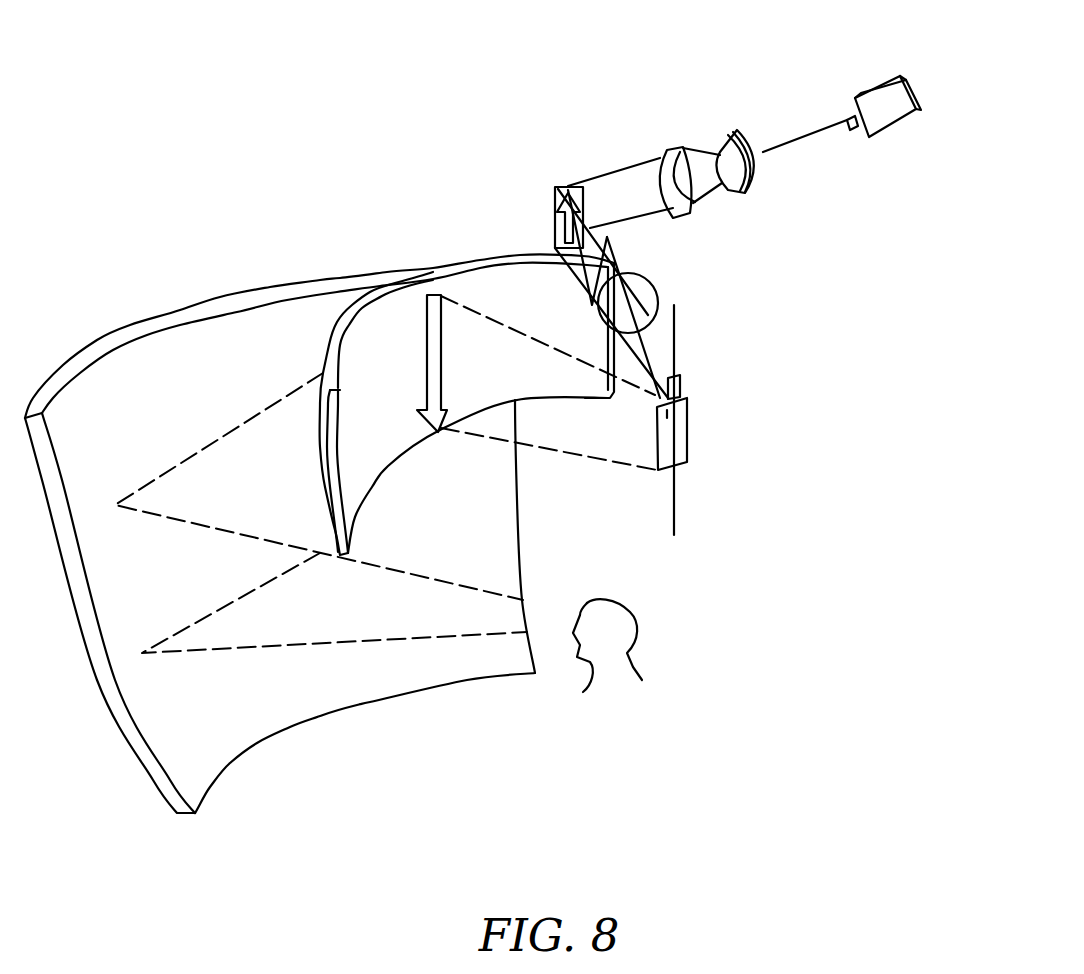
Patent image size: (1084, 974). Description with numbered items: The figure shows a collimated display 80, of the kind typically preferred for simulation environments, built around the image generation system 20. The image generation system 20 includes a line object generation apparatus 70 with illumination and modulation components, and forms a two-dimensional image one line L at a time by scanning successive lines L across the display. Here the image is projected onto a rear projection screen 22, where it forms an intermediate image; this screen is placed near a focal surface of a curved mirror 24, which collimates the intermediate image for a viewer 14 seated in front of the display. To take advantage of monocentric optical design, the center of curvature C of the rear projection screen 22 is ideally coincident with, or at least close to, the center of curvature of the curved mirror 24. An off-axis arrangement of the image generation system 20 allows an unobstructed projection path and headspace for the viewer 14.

The collimated display 80 is at (245, 170).
The line object generation apparatus 70 is at (562, 175).
The image generation system 20 is at (732, 365).
The rear projection screen 22 is at (337, 327).
The curved mirror 24 is at (333, 710).
The viewer 14 is at (627, 653).
The line L is at (437, 293).
The center of curvature C is at (670, 443).